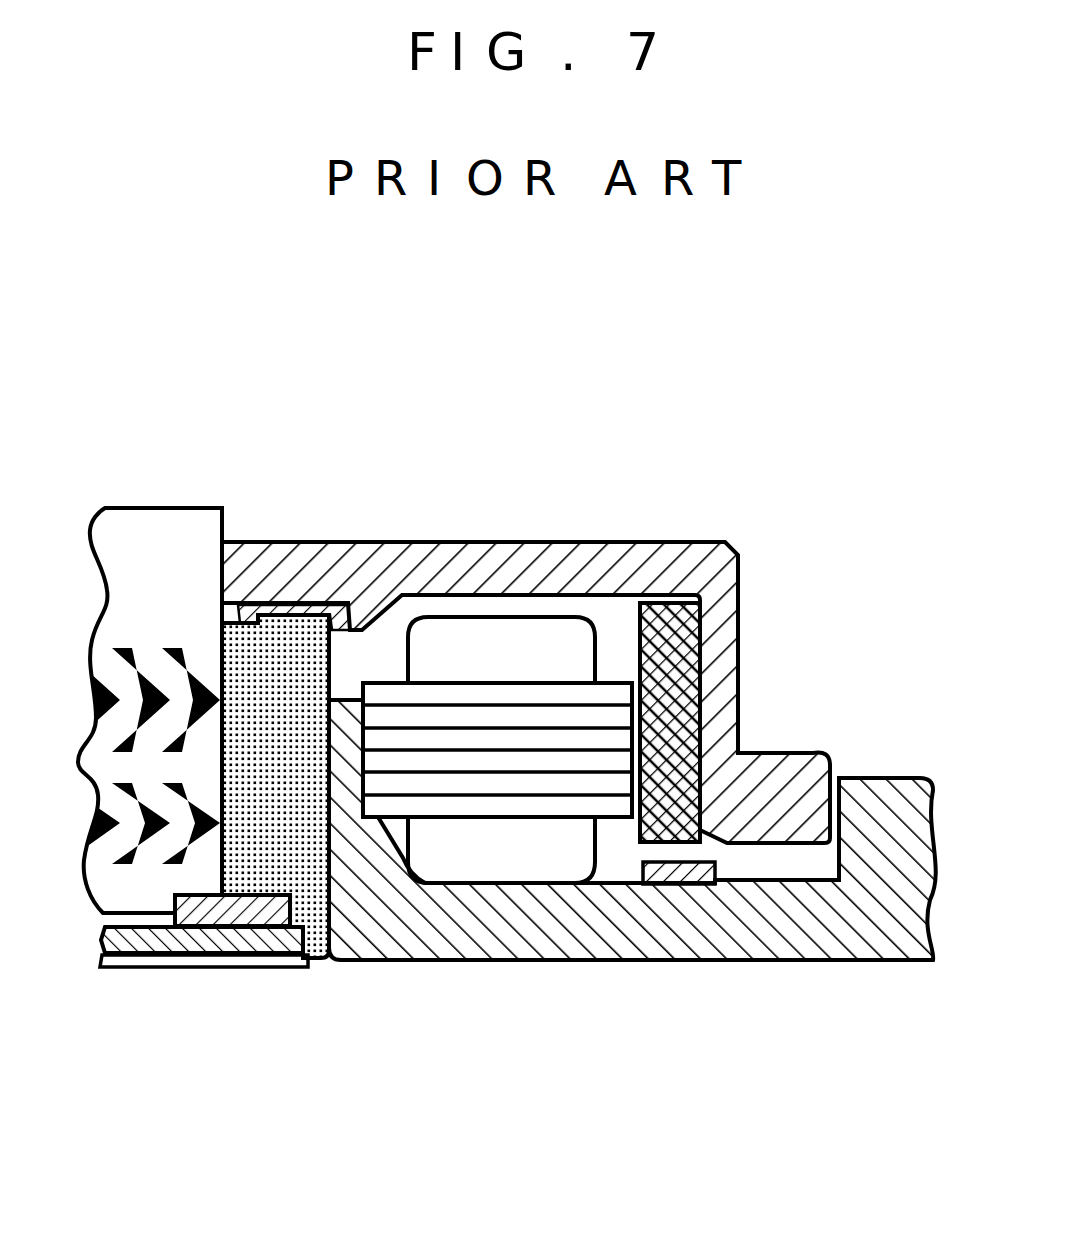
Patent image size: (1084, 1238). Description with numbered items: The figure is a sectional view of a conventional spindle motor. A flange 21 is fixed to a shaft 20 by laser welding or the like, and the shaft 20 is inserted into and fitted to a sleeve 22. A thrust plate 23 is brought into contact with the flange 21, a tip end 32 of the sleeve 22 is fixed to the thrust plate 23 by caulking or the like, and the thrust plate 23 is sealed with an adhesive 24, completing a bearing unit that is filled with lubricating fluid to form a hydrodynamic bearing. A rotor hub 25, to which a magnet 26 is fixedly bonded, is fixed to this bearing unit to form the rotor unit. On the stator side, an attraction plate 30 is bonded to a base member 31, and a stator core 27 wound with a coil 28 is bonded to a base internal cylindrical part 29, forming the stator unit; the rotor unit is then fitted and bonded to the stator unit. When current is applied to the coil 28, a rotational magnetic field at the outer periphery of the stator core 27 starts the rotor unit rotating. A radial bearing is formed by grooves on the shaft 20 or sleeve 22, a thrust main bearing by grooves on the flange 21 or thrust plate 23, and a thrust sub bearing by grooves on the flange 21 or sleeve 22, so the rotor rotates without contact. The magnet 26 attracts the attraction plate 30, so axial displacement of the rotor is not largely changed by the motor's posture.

The shaft 20 is at (135, 507).
The flange 21 is at (248, 912).
The sleeve 22 is at (310, 845).
The thrust plate 23 is at (132, 967).
The adhesive 24 is at (197, 967).
The rotor hub 25 is at (700, 542).
The magnet 26 is at (673, 647).
The stator core 27 is at (617, 687).
The coil 28 is at (508, 630).
The base internal cylindrical part 29 is at (358, 755).
The attraction plate 30 is at (727, 880).
The base member 31 is at (653, 923).
The tip end 32 is at (310, 967).